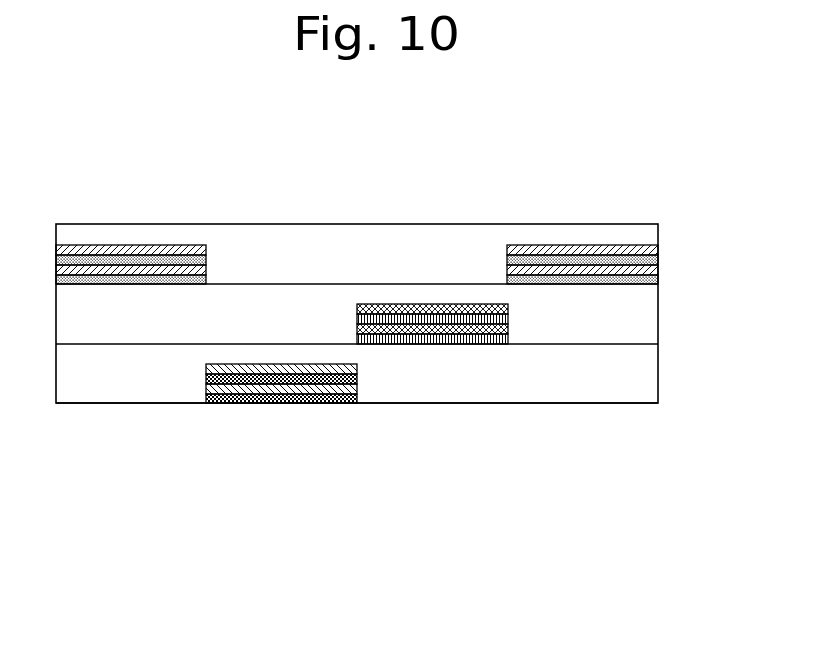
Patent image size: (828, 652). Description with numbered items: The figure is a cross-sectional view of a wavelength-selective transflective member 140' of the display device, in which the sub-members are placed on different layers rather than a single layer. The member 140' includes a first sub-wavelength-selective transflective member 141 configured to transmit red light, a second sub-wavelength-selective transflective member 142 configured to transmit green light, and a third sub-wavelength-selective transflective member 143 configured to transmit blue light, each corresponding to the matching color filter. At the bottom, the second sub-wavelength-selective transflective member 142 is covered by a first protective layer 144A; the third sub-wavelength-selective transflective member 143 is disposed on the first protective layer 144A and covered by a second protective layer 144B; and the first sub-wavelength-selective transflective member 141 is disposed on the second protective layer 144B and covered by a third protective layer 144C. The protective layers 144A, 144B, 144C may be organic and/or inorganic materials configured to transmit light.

The wavelength-selective transflective member 140' is at (357, 259).
The first sub-wavelength-selective transflective member 141 is at (148, 243).
The second sub-wavelength-selective transflective member 142 is at (290, 361).
The third sub-wavelength-selective transflective member 143 is at (431, 302).
The first protective layer 144A is at (645, 373).
The second protective layer 144B is at (645, 316).
The third protective layer 144C is at (645, 234).